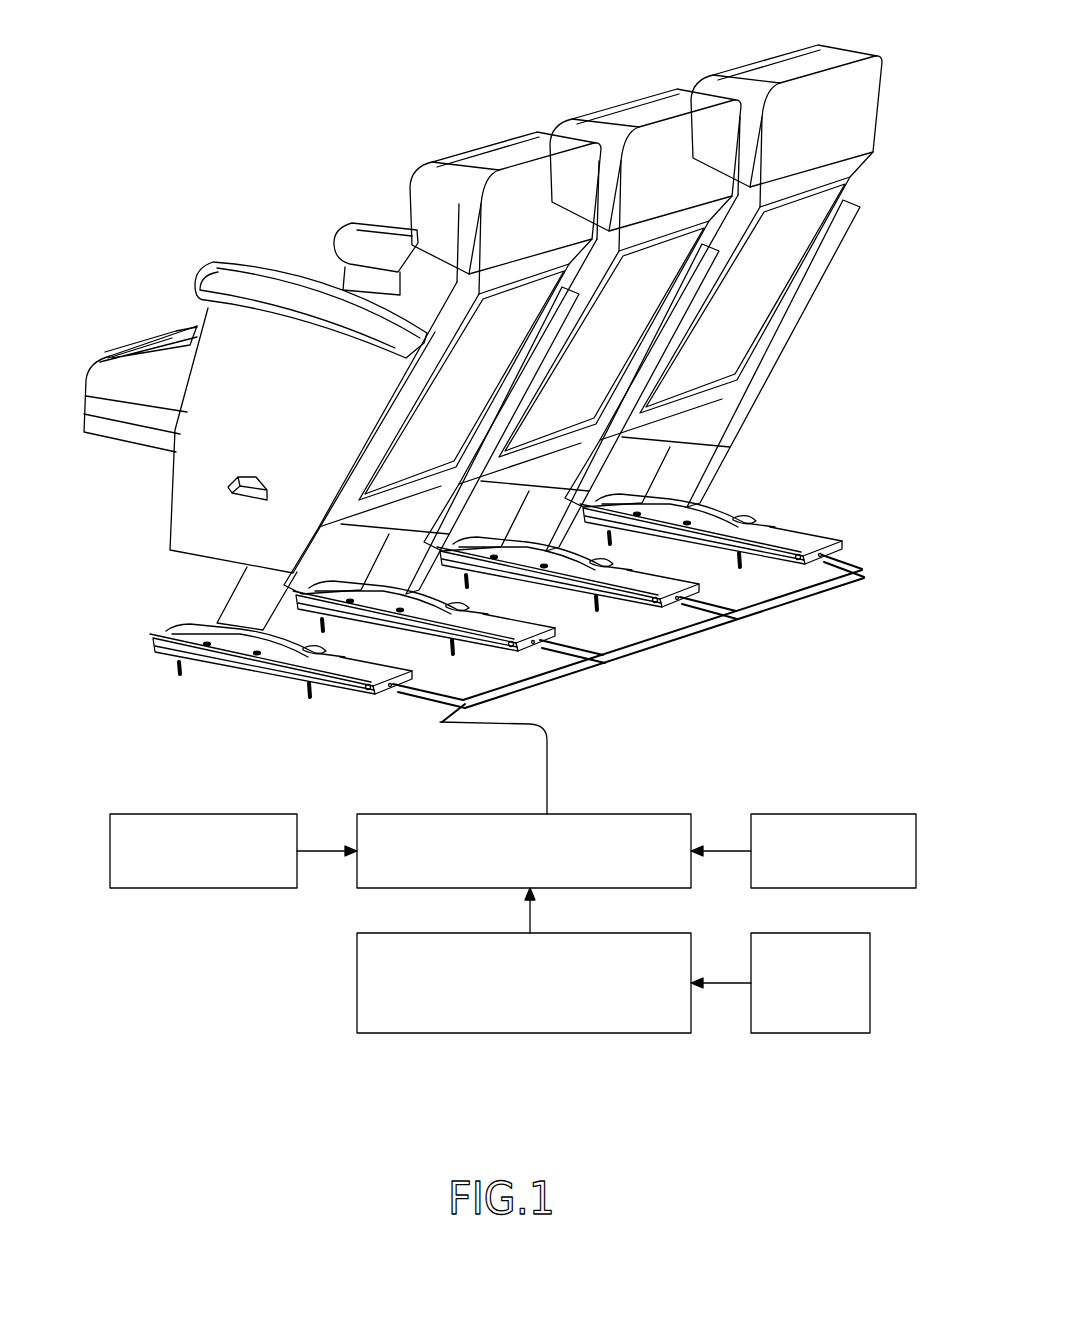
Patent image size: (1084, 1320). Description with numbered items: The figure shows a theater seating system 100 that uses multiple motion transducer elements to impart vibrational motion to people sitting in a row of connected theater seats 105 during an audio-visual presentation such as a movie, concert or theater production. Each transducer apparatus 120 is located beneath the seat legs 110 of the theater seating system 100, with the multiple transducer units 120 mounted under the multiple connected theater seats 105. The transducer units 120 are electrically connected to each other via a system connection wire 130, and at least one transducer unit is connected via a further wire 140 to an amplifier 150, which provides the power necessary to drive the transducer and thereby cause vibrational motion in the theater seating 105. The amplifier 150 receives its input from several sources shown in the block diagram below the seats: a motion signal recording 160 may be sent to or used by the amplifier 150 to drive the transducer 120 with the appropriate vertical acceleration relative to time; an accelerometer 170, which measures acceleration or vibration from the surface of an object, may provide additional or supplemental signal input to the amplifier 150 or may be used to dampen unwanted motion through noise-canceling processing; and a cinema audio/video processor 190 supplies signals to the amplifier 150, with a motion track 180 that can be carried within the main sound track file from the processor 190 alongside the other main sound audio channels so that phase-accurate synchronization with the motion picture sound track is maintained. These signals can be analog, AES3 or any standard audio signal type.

The theater seating system 100 is at (287, 140).
The theater seats 105 is at (790, 62).
The seat legs 110 is at (250, 602).
The transducer apparatus 120 is at (662, 590).
The system connection wire 130 is at (556, 677).
The wire 140 is at (440, 722).
The amplifier 150 is at (673, 814).
The motion signal recording 160 is at (902, 814).
The accelerometer 170 is at (153, 888).
The motion track 180 is at (815, 1033).
The cinema audio/video processor 190 is at (357, 997).